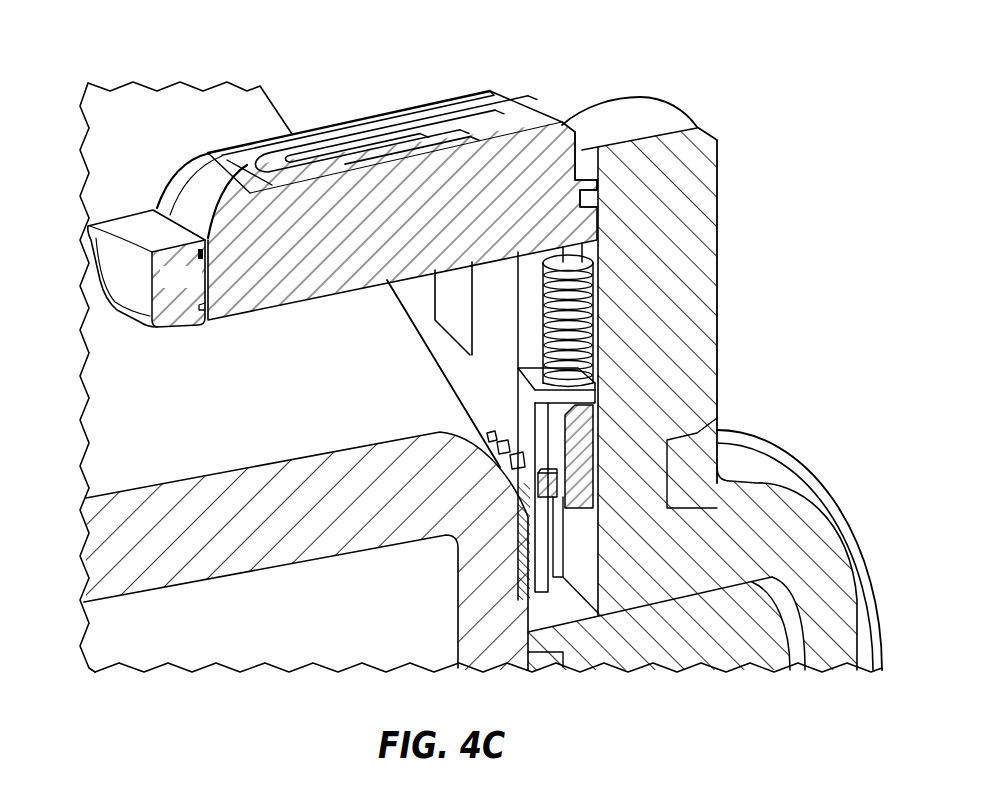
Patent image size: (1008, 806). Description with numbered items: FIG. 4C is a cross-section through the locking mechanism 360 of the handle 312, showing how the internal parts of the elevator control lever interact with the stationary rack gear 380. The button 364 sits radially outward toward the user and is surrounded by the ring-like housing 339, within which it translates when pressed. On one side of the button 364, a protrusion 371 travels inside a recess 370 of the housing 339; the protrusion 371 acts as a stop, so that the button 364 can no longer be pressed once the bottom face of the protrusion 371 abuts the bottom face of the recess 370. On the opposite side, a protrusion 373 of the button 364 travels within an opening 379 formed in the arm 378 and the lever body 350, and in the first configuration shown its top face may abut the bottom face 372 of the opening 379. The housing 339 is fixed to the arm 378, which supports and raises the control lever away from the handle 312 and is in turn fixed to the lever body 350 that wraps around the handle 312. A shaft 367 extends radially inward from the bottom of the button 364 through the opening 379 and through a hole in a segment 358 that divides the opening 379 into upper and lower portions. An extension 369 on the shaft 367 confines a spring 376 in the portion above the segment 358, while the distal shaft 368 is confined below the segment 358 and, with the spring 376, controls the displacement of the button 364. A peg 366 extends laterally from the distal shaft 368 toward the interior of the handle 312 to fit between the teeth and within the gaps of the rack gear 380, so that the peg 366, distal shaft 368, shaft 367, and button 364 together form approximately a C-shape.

The handle 312 is at (110, 416).
The housing 339 is at (127, 243).
The lever body 350 is at (830, 598).
The segment 358 is at (497, 363).
The locking mechanism 360 is at (721, 91).
The button 364 is at (503, 95).
The peg 366 is at (553, 483).
The shaft 367 is at (574, 250).
The distal shaft 368 is at (583, 437).
The extension 369 is at (582, 273).
The recess 370 is at (205, 298).
The protrusion 371 is at (206, 252).
The bottom face of opening 372 is at (580, 178).
The protrusion 373 is at (582, 217).
The spring 376 is at (587, 360).
The arm 378 is at (697, 260).
The opening 379 is at (527, 303).
The rack gear 380 is at (513, 473).